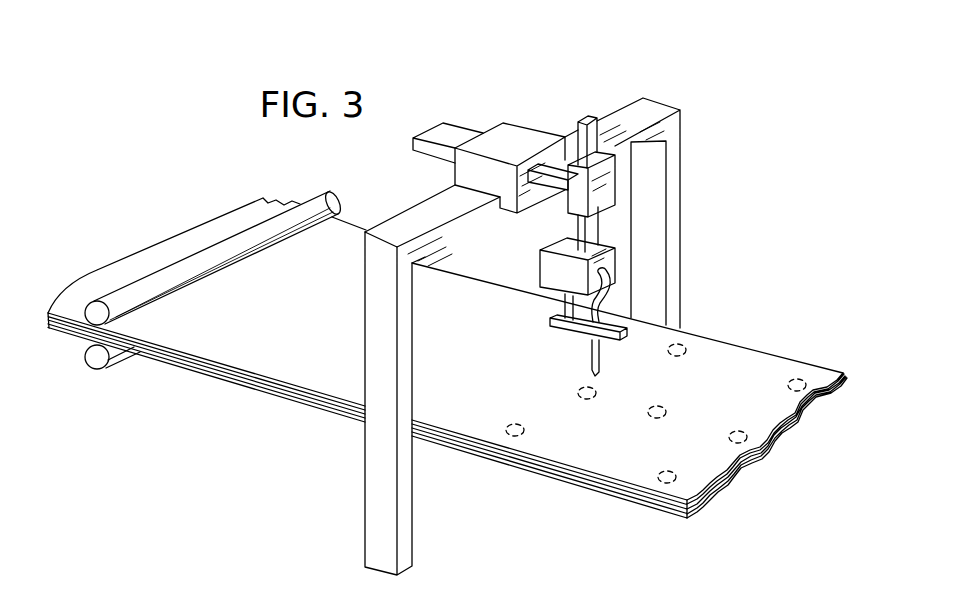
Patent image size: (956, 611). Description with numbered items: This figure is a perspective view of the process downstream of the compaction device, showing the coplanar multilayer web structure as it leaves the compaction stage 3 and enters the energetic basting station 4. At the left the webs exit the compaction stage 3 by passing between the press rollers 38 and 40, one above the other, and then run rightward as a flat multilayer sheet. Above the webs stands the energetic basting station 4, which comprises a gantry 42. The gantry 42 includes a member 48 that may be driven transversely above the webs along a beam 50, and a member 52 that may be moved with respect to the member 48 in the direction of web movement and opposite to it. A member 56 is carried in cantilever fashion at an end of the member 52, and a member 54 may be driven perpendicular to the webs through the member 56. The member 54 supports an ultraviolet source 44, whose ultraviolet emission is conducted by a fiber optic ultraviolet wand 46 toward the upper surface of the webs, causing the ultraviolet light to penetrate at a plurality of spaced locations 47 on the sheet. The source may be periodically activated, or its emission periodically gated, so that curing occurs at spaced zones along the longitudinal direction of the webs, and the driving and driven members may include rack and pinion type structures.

The compaction stage 3 is at (168, 228).
The energetic basting station 4 is at (586, 95).
The press roller 38 is at (107, 300).
The press roller 40 is at (110, 362).
The gantry 42 is at (517, 123).
The ultraviolet source 44 is at (578, 243).
The fiber optic ultraviolet wand 46 is at (600, 297).
The spaced locations 47 is at (648, 412).
The member 48 is at (483, 133).
The beam 50 is at (430, 245).
The member 52 is at (547, 168).
The member 54 is at (590, 118).
The member 56 is at (612, 193).